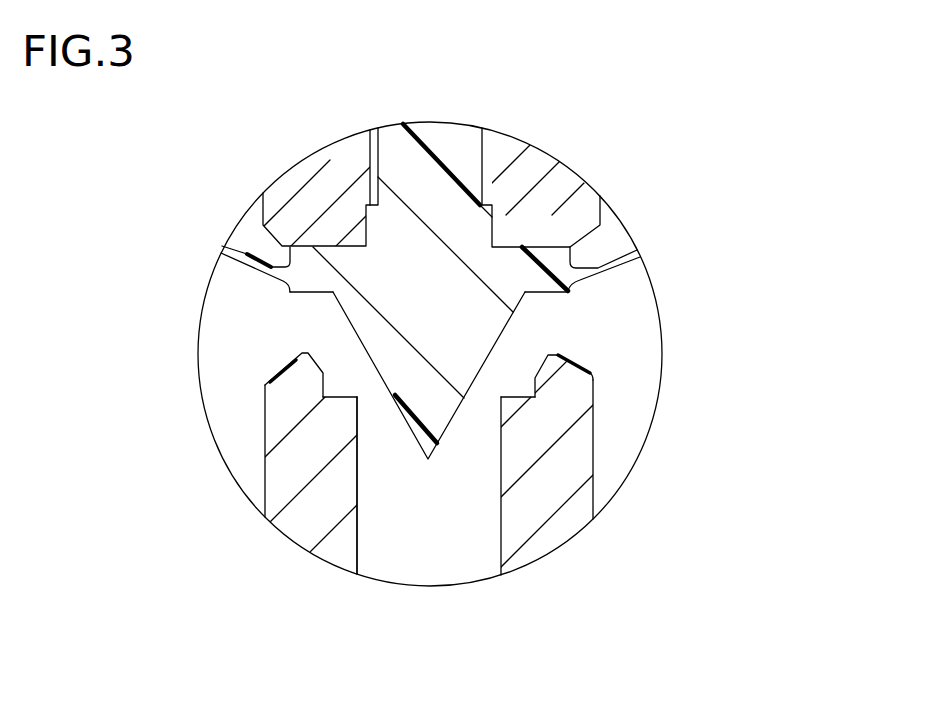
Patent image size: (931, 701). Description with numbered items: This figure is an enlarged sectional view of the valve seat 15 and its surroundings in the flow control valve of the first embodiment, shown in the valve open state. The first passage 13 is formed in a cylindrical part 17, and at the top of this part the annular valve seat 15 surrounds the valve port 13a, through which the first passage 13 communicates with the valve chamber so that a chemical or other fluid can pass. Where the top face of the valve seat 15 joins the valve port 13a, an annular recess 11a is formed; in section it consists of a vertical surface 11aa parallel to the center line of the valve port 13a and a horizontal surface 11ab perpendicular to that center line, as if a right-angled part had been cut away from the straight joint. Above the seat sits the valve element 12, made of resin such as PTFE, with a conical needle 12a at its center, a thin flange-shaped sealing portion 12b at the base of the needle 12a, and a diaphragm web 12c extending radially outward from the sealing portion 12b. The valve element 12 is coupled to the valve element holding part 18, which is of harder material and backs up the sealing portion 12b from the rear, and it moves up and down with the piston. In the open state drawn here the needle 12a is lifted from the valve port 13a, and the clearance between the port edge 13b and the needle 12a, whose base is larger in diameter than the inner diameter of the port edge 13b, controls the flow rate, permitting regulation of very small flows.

The annular recess 11a is at (329, 386).
The vertical surface 11aa is at (537, 382).
The horizontal surface 11ab is at (505, 396).
The valve element 12 is at (460, 262).
The needle 12a is at (445, 400).
The sealing portion 12b is at (553, 293).
The diaphragm web 12c is at (607, 258).
The first passage 13 is at (458, 537).
The valve port 13a is at (358, 522).
The port edge 13b is at (371, 390).
The valve seat 15 is at (303, 353).
The cylindrical part 17 is at (310, 528).
The valve element holding part 18 is at (297, 212).